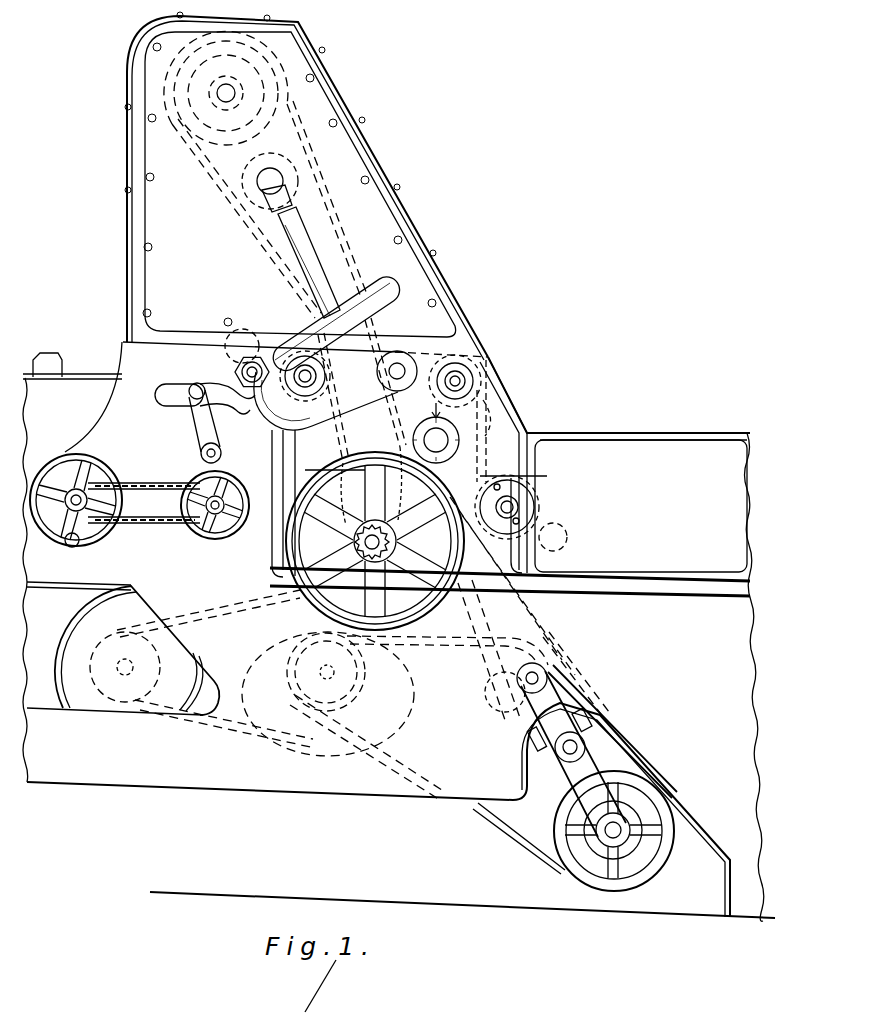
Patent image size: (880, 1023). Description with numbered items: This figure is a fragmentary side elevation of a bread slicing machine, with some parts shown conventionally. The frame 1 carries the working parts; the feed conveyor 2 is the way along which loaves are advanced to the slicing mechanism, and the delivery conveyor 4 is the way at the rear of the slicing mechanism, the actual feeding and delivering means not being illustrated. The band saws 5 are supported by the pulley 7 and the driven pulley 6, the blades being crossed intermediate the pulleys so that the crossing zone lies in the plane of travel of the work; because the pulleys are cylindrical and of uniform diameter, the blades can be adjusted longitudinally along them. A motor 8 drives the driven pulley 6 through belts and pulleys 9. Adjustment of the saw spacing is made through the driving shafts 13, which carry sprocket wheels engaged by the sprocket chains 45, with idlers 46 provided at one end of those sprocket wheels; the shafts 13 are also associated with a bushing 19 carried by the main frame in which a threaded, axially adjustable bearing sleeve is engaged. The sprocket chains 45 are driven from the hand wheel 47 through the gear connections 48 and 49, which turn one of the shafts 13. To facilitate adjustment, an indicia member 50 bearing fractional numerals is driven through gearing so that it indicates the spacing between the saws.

The frame 1 is at (35, 577).
The feed conveyor 2 is at (41, 458).
The delivery conveyor 4 is at (490, 372).
The band saws 5 is at (555, 645).
The driven pulley 6 is at (578, 867).
The pulley 7 is at (200, 145).
The motor 8 is at (63, 655).
The belts and pulleys 9 is at (408, 705).
The shaft 13 is at (303, 381).
The bushing 19 is at (258, 402).
The sprocket chains 45 is at (497, 421).
The idlers 46 is at (232, 356).
The hand wheel 47 is at (426, 579).
The gear connection 48 is at (352, 543).
The gear connection 49 is at (360, 462).
The indicia member 50 is at (441, 458).